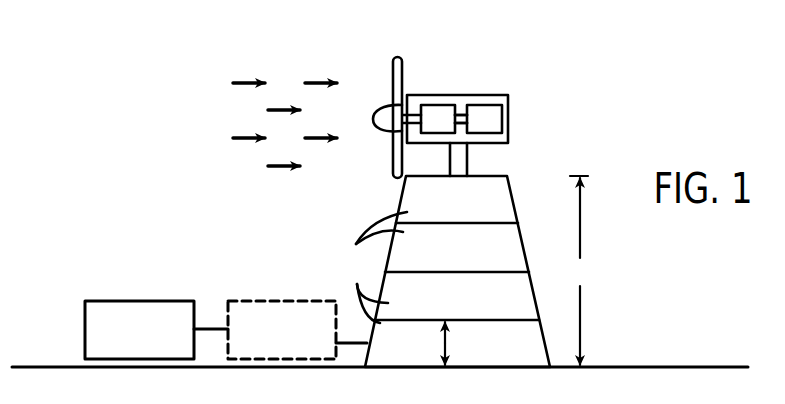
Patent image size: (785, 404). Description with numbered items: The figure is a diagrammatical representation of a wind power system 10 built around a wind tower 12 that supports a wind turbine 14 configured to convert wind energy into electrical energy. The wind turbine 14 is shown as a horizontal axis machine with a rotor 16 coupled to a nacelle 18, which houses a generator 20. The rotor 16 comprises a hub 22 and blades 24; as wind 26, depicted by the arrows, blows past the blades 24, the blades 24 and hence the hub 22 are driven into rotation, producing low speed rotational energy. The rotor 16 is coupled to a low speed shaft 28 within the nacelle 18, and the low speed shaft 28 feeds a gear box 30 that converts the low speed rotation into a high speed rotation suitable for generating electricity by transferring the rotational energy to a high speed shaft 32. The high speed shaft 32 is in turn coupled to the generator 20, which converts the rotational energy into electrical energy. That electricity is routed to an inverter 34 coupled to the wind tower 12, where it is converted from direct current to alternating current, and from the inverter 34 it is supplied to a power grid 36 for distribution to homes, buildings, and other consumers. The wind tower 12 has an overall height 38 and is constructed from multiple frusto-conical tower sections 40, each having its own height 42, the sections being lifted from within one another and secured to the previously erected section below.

The wind power system 10 is at (92, 80).
The wind tower 12 is at (526, 192).
The wind turbine 14 is at (514, 116).
The rotor 16 is at (385, 117).
The nacelle 18 is at (462, 90).
The generator 20 is at (484, 103).
The hub 22 is at (383, 135).
The blades 24 is at (398, 58).
The wind 26 is at (288, 98).
The low speed shaft 28 is at (413, 128).
The gear box 30 is at (432, 104).
The high speed shaft 32 is at (462, 112).
The inverter 34 is at (282, 300).
The power grid 36 is at (141, 300).
The height 38 is at (580, 270).
The tower sections 40 is at (377, 267).
The height 42 is at (450, 344).